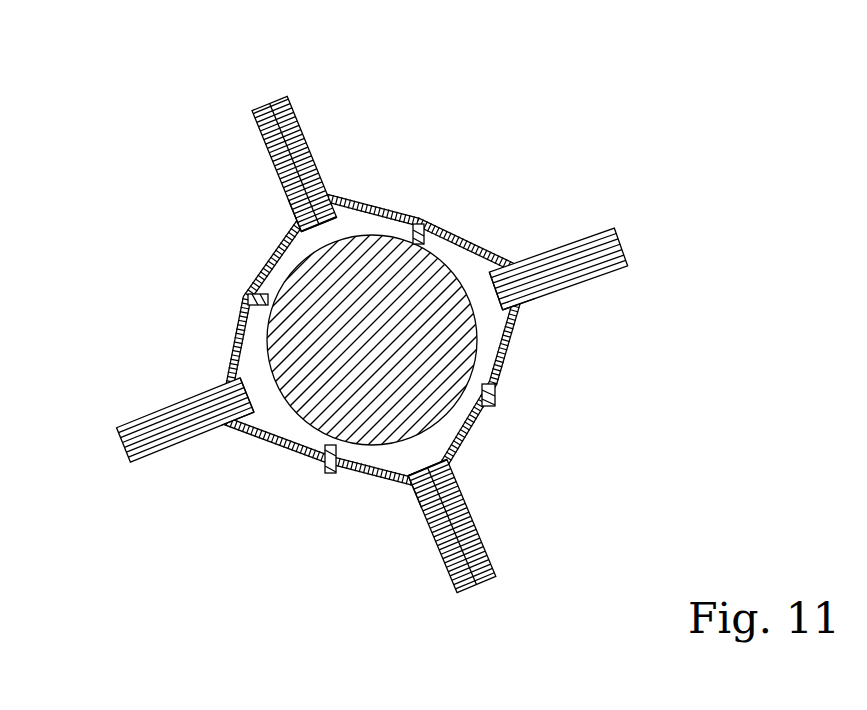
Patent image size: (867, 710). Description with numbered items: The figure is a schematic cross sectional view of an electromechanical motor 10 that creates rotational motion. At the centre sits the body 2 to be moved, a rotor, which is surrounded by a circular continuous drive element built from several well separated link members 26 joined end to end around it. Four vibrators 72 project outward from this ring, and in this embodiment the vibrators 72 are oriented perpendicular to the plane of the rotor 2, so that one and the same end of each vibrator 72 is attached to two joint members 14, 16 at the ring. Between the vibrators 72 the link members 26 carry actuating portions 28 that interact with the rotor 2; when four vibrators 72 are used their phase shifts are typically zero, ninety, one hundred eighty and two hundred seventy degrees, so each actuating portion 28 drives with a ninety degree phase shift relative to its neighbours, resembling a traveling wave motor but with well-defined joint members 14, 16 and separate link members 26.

The body 2 is at (446, 283).
The support assembly 10 is at (124, 522).
The joint member 14 is at (508, 268).
The joint member 16 is at (336, 198).
The link member 26 is at (396, 207).
The actuating portion 28 is at (420, 222).
The vibrator 72 is at (278, 100).